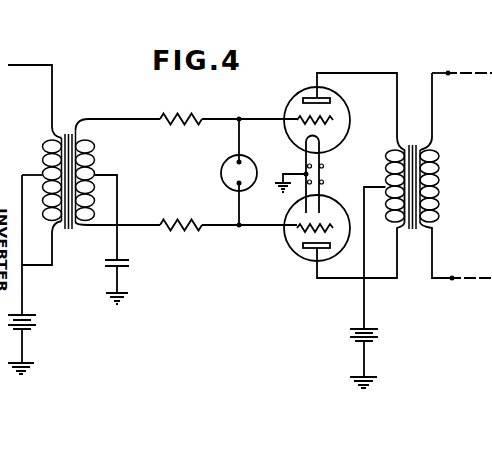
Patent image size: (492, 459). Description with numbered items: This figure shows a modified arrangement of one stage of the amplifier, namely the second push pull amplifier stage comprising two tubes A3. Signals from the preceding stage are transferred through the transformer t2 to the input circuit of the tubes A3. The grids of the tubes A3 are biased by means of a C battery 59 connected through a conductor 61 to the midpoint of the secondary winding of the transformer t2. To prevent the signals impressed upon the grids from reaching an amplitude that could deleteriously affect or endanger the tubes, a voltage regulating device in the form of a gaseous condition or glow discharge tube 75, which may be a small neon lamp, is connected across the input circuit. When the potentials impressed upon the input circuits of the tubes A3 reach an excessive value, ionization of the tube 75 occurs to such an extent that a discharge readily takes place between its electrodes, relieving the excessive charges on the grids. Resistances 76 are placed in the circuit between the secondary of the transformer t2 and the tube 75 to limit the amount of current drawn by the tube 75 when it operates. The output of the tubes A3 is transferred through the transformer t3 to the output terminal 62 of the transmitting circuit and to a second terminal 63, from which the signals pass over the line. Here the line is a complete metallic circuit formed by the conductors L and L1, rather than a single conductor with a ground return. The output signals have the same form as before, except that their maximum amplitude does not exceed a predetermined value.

The C battery 59 is at (130, 265).
The conductor 61 is at (118, 212).
The output terminal 62 is at (448, 76).
The terminal 63 is at (452, 281).
The glow discharge tube 75 is at (228, 161).
The resistances 76 is at (194, 99).
The transformer t2 is at (69, 165).
The transformer t3 is at (413, 170).
The tubes A3 is at (347, 108).
The line L is at (474, 73).
The conductor L1 is at (488, 284).